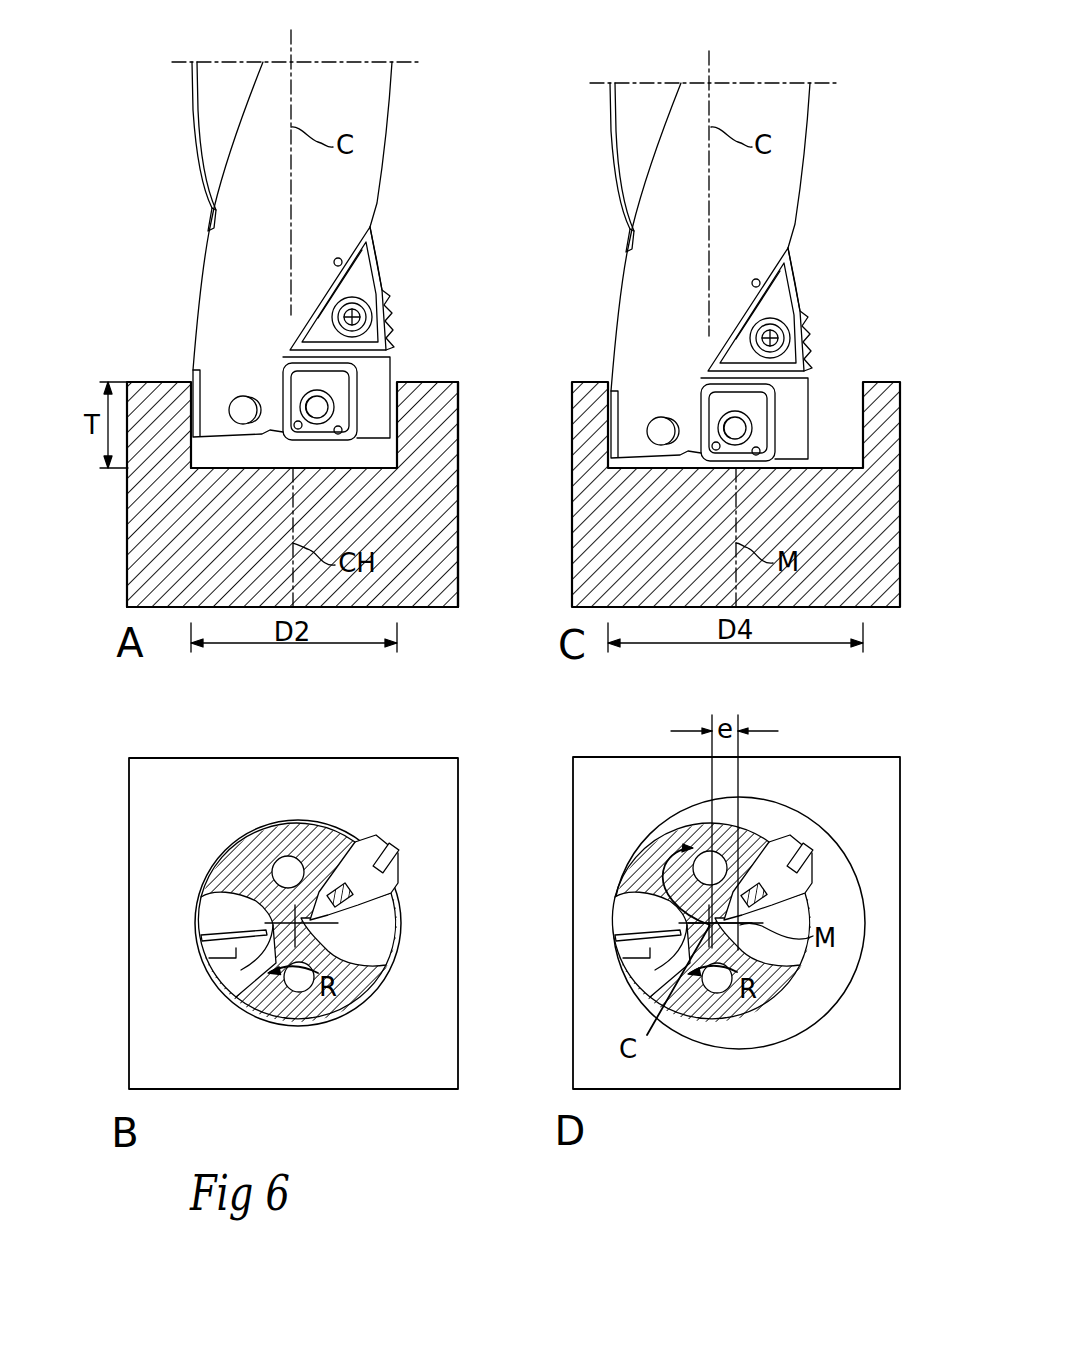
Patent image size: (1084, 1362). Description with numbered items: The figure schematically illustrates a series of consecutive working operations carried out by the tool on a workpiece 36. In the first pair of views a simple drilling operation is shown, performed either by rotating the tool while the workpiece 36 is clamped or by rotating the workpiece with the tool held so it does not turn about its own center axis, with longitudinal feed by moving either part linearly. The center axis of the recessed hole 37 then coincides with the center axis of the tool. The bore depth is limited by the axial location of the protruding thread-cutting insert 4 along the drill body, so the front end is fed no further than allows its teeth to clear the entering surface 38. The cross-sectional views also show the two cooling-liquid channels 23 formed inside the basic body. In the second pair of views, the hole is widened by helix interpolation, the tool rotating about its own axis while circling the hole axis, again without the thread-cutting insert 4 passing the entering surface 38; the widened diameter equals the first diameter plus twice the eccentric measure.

The thread-cutting insert 4 is at (367, 289).
The cooling-liquid channels 23 is at (284, 857).
The workpiece 36 is at (470, 437).
The recessed hole 37 is at (388, 455).
The entering surface 38 is at (418, 382).